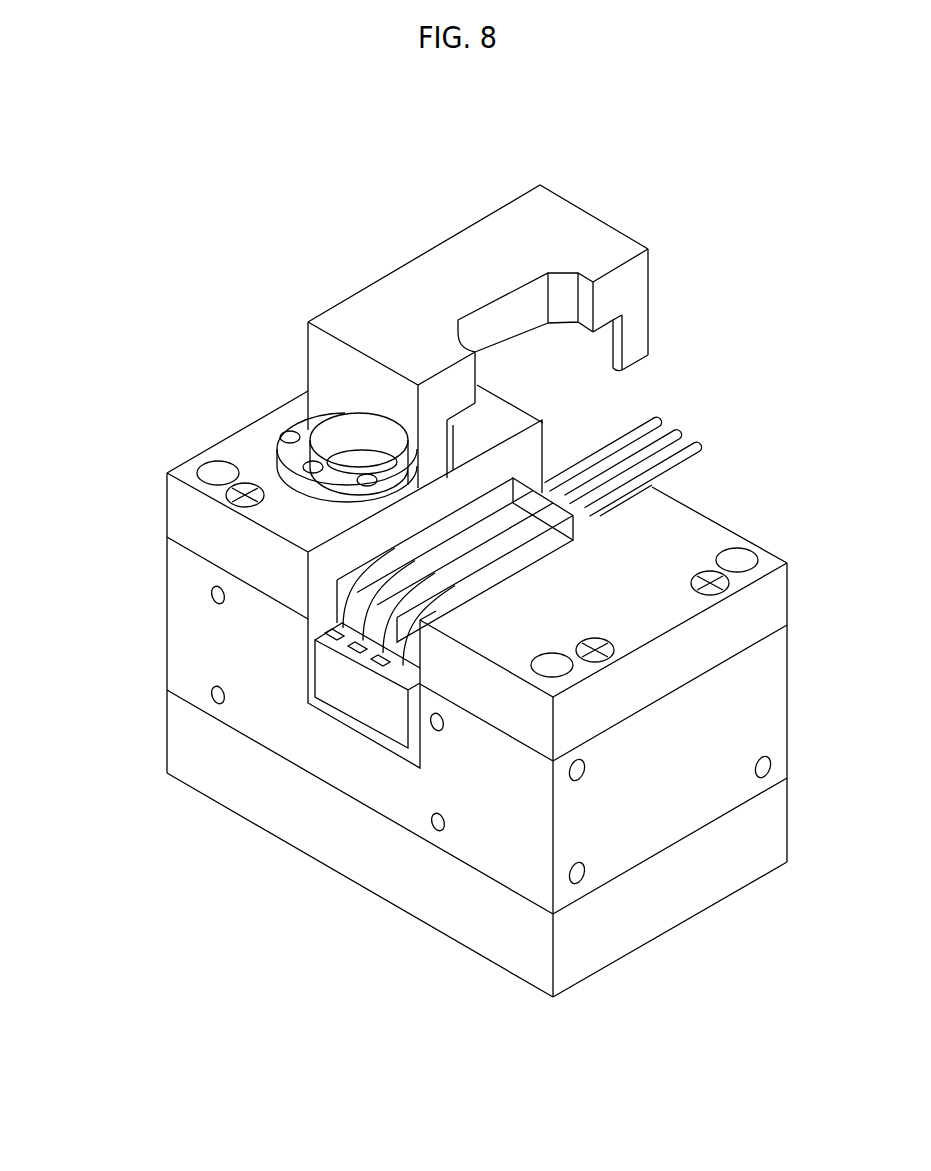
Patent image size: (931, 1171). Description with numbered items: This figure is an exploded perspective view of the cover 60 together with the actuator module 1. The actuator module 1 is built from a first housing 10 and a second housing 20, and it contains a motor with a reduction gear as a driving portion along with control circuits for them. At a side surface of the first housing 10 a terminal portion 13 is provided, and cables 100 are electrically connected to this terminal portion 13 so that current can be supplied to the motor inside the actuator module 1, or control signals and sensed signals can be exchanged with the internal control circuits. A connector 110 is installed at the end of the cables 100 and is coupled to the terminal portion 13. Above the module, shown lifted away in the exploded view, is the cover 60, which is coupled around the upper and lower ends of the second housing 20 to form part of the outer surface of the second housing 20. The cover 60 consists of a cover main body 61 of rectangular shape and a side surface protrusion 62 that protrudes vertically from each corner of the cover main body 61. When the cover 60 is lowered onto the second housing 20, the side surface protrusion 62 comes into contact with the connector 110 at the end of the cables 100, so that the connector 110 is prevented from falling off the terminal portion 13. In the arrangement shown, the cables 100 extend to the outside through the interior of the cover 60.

The actuator module 1 is at (441, 661).
The first housing 10 is at (183, 605).
The terminal portion 13 is at (385, 738).
The second housing 20 is at (183, 510).
The cover 60 is at (534, 296).
The cover main body 61 is at (600, 242).
The side surface protrusion 62 is at (637, 342).
The cables 100 is at (670, 462).
The connector 110 is at (370, 703).